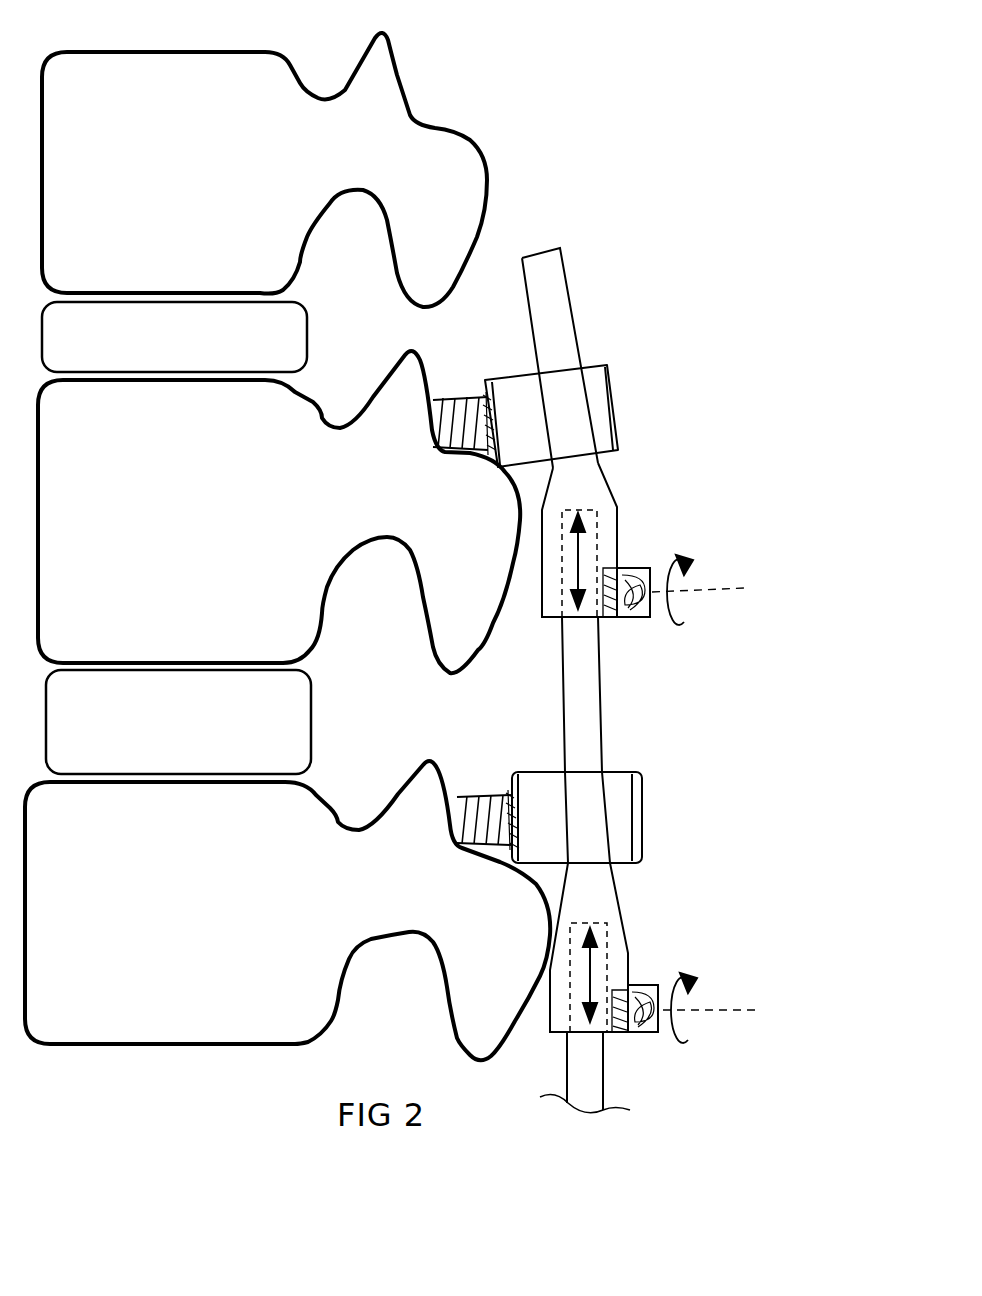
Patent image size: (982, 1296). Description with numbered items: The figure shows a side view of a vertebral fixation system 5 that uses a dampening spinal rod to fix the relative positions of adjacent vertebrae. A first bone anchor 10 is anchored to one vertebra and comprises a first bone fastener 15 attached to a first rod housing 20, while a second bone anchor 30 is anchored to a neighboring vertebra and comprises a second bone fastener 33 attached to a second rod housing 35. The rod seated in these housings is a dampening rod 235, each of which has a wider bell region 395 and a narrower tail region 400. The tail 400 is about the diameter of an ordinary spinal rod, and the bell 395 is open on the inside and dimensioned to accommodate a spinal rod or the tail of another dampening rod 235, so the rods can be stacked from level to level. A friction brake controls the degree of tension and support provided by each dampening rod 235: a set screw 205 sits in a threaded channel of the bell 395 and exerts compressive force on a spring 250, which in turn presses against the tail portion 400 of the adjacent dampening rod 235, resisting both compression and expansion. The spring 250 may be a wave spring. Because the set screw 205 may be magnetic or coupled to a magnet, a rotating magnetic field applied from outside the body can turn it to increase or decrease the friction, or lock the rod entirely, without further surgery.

The vertebral fixation system 5 is at (639, 663).
The first bone anchor 10 is at (569, 375).
The first bone fastener 15 is at (463, 397).
The first rod housing 20 is at (592, 362).
The second bone anchor 30 is at (593, 783).
The second bone fastener 33 is at (485, 797).
The second rod housing 35 is at (620, 770).
The set screw 205 is at (647, 620).
The dampening rod 235 is at (632, 503).
The spring 250 is at (613, 570).
The bell region 395 is at (637, 937).
The tail region 400 is at (567, 273).